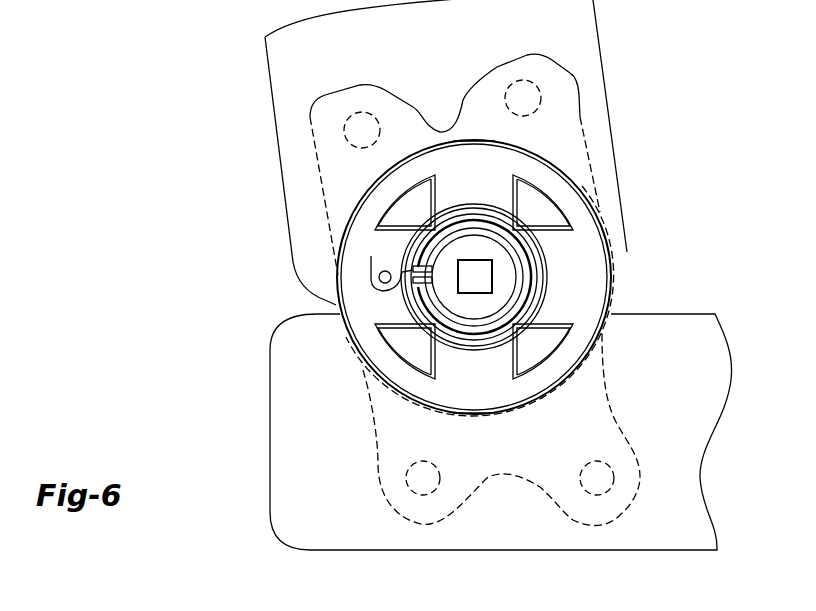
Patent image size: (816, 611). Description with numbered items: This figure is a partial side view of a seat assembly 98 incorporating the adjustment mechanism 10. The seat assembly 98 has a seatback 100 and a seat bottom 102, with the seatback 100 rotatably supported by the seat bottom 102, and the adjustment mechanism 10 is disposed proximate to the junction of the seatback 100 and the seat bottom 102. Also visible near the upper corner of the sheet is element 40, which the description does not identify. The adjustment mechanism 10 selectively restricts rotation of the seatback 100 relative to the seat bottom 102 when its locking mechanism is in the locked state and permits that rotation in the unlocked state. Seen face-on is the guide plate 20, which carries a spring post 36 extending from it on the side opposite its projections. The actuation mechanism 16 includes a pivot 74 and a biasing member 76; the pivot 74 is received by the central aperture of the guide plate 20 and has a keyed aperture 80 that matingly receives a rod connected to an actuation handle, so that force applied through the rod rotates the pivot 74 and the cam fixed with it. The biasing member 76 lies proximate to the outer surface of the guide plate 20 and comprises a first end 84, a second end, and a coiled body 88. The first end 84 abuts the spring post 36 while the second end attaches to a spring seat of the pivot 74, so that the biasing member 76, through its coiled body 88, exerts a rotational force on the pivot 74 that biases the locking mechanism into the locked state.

The adjustment mechanism 10 is at (593, 259).
The actuation mechanism 16 is at (440, 297).
The guide plate 20 is at (502, 195).
The spring post 36 is at (370, 258).
The seat frame 40 is at (77, 4).
The pivot 74 is at (502, 285).
The biasing member 76 is at (417, 223).
The keyed aperture 80 is at (473, 290).
The first end 84 is at (378, 278).
The coiled body 88 is at (540, 228).
The seat assembly 98 is at (275, 125).
The seatback 100 is at (588, 8).
The seat bottom 102 is at (692, 320).